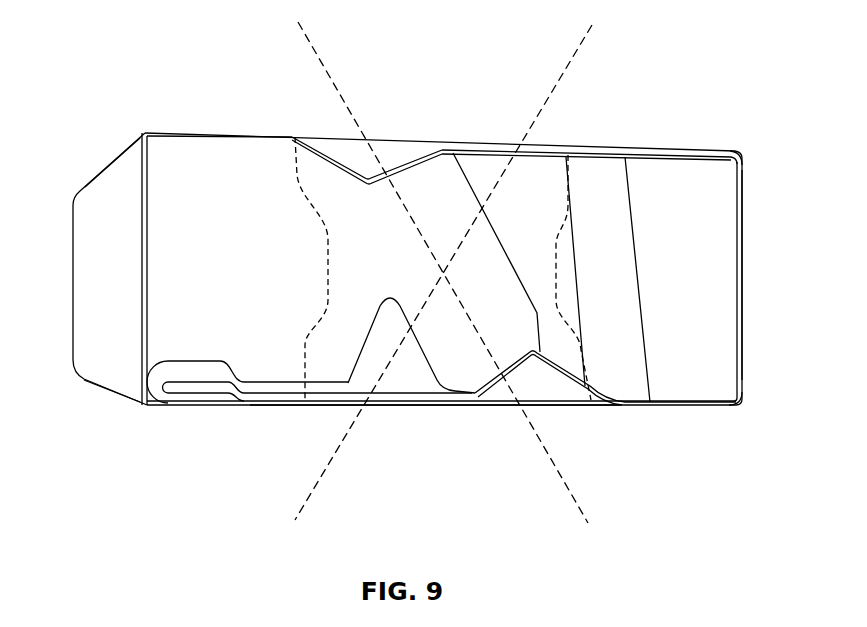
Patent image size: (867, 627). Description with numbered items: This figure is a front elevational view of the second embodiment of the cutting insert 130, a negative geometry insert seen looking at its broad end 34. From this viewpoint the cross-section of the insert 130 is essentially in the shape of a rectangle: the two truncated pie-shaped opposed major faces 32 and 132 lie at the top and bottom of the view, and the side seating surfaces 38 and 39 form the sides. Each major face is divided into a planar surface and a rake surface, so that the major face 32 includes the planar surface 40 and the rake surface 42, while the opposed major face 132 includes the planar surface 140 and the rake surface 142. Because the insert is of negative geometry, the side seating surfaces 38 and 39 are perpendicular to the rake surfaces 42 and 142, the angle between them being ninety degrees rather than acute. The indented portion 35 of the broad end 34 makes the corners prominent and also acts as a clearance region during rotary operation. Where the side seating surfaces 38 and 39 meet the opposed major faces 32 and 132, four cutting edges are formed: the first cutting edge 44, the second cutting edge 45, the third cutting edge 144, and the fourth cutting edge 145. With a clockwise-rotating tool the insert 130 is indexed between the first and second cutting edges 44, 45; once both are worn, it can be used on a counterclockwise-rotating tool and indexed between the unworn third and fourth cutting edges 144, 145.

The insert 130 is at (131, 66).
The rake surface 42 is at (178, 133).
The indented portion 35 is at (252, 165).
The major face 32 is at (493, 147).
The planar surface 40 is at (606, 147).
The third cutting edge 144 is at (743, 155).
The side seating surface 38 is at (744, 209).
The broad end 34 is at (618, 283).
The first cutting edge 44 is at (744, 402).
The side seating surface 39 is at (88, 261).
The second cutting edge 45 is at (114, 165).
The fourth cutting edge 145 is at (104, 392).
The planar surface 140 is at (322, 399).
The major face 132 is at (467, 405).
The rake surface 142 is at (572, 395).